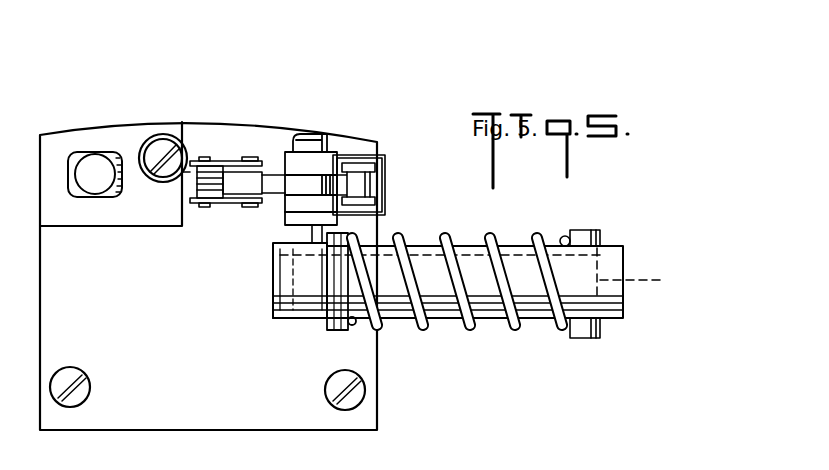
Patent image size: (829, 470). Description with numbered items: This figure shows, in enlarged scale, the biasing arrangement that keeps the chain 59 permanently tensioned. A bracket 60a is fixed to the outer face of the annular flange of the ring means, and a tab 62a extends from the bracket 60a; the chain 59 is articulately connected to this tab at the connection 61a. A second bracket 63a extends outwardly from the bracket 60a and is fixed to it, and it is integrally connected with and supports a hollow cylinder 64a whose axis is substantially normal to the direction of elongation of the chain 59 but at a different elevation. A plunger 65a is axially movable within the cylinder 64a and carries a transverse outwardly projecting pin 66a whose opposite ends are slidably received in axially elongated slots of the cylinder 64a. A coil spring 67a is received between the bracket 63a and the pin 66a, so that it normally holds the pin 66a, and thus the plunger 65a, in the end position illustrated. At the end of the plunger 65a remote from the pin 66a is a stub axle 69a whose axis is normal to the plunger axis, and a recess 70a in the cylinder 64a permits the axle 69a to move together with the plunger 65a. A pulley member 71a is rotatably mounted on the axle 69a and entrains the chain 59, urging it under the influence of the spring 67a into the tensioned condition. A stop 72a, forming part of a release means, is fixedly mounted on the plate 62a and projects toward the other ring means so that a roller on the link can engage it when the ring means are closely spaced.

The chain 59 is at (253, 183).
The bracket 60a is at (226, 361).
The articulated connection 61a is at (211, 162).
The tab 62a is at (143, 212).
The second bracket 63a is at (325, 326).
The hollow cylinder 64a is at (625, 251).
The plunger 65a is at (492, 272).
The pin 66a is at (595, 235).
The coil spring 67a is at (503, 288).
The stub axle 69a is at (297, 235).
The recess 70a is at (307, 250).
The pulley member 71a is at (313, 183).
The stop 72a is at (96, 168).